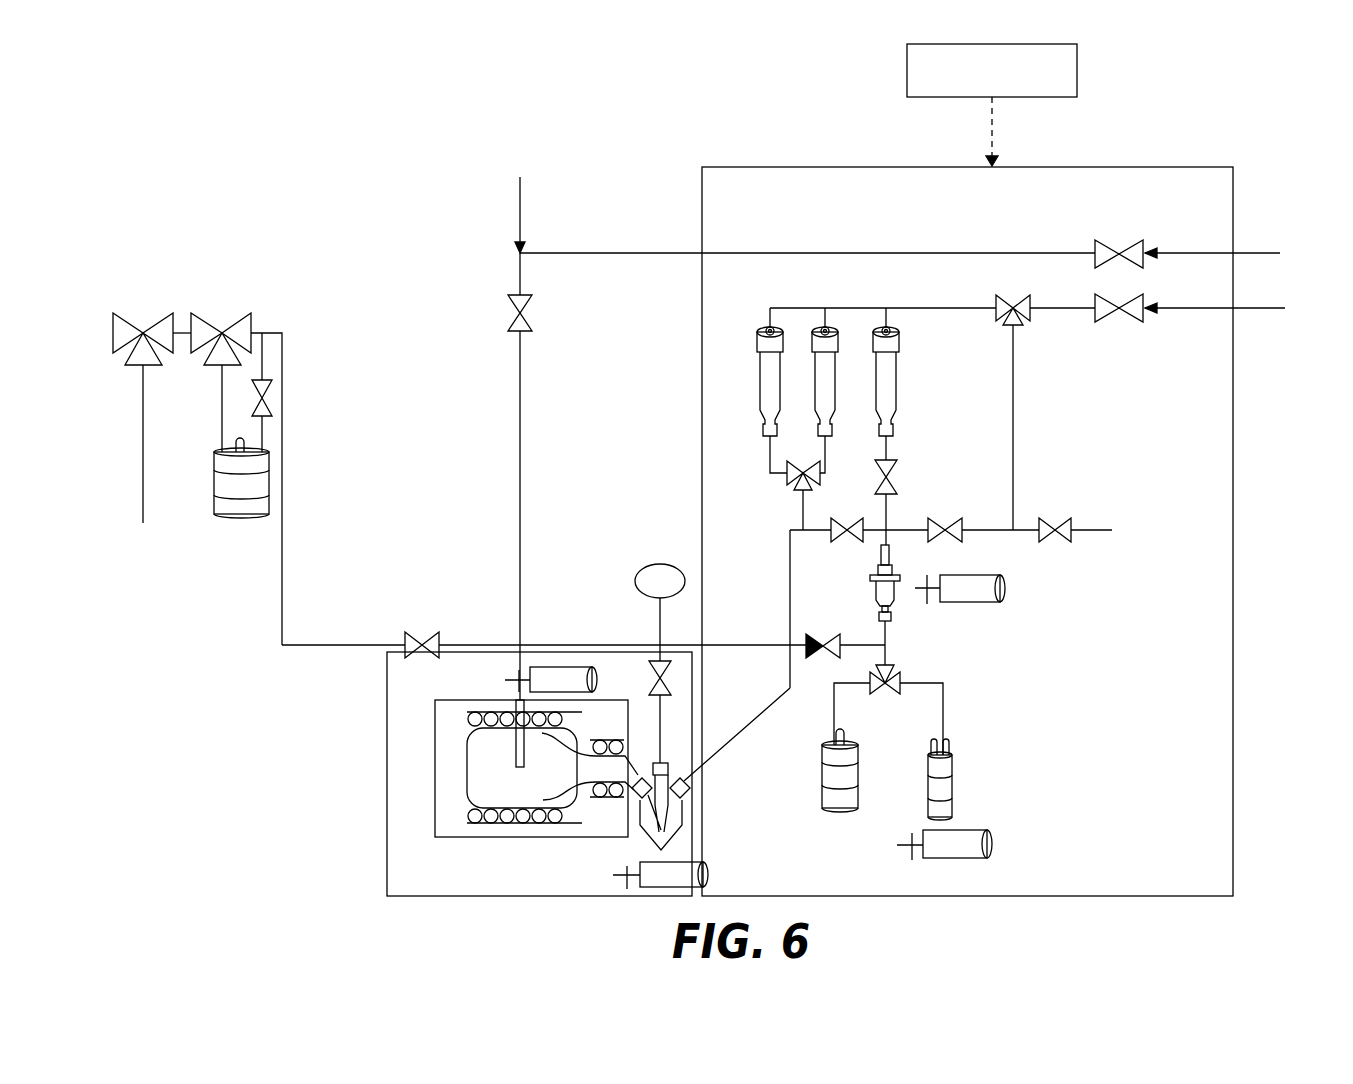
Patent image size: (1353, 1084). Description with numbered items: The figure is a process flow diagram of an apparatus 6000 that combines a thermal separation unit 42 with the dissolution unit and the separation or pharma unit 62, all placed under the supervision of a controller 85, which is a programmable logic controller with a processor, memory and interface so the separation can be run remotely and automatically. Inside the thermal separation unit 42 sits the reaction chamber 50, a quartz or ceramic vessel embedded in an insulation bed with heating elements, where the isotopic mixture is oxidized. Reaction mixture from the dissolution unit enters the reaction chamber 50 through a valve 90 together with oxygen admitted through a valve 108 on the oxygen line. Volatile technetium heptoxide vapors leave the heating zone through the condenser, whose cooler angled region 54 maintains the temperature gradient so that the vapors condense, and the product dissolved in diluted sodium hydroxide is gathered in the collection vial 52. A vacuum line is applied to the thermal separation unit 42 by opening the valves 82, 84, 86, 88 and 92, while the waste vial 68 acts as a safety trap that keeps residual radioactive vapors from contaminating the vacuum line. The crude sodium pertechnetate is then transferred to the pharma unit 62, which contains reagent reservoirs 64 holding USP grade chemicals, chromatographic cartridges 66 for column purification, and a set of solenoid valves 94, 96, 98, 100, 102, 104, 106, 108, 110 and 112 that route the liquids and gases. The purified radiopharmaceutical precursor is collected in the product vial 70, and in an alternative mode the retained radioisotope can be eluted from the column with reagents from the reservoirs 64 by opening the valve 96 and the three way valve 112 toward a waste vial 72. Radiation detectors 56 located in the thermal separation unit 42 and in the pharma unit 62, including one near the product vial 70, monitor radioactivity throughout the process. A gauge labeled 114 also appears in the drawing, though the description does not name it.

The apparatus 6000 is at (270, 188).
The thermal separation unit 42 is at (470, 822).
The reaction chamber 50 is at (478, 757).
The collection vial 52 is at (672, 830).
The angled region 54 is at (640, 823).
The radiation detectors 56 is at (593, 681).
The pharma unit 62 is at (1088, 862).
The reagent reservoirs 64 is at (766, 378).
The chromatographic cartridges 66 is at (893, 585).
The waste vial 68 is at (240, 510).
The product vial 70 is at (955, 782).
The waste vial 72 is at (838, 775).
The valve 82 is at (126, 362).
The valve 84 is at (222, 332).
The controller 85 is at (1078, 72).
The valve 86 is at (265, 398).
The valve 88 is at (428, 643).
The valve 90 is at (518, 313).
The valve 92 is at (668, 682).
The solenoid valve 94 is at (800, 488).
The valve 96 is at (890, 478).
The solenoid valve 98 is at (846, 540).
The solenoid valve 100 is at (948, 530).
The solenoid valve 102 is at (1060, 535).
The solenoid valve 104 is at (1013, 306).
The solenoid valve 106 is at (1120, 311).
The valve 108 is at (1120, 252).
The solenoid valve 110 is at (826, 652).
The three way valve 112 is at (888, 690).
The pressure gauge 114 is at (660, 581).